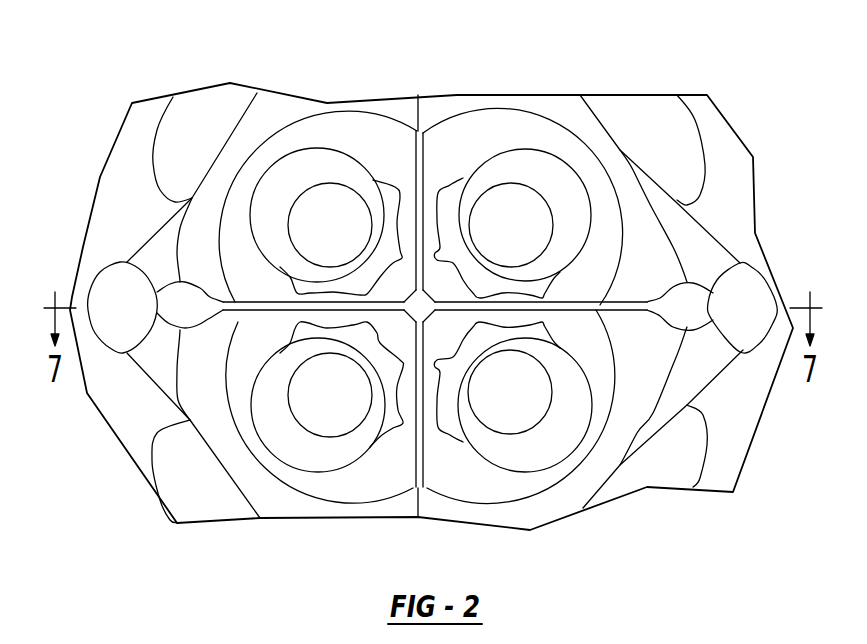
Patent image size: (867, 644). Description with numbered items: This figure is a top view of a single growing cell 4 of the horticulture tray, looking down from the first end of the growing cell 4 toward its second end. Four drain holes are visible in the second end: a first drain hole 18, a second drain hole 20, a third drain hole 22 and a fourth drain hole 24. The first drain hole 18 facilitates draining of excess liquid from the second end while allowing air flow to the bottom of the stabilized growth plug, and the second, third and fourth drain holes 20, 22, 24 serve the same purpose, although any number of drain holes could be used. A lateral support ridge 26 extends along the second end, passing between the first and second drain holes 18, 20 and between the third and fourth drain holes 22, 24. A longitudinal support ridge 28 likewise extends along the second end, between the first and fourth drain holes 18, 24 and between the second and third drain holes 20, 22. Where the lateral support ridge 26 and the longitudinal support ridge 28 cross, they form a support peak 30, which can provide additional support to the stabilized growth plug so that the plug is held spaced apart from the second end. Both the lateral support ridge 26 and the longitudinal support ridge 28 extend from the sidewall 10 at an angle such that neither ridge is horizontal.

The growing cell 4 is at (535, 107).
The sidewall 10 is at (607, 158).
The first drain hole 18 is at (323, 418).
The second drain hole 20 is at (330, 213).
The third drain hole 22 is at (505, 210).
The fourth drain hole 24 is at (517, 405).
The lateral support ridge 26 is at (567, 307).
The longitudinal support ridge 28 is at (418, 443).
The support peak 30 is at (420, 306).